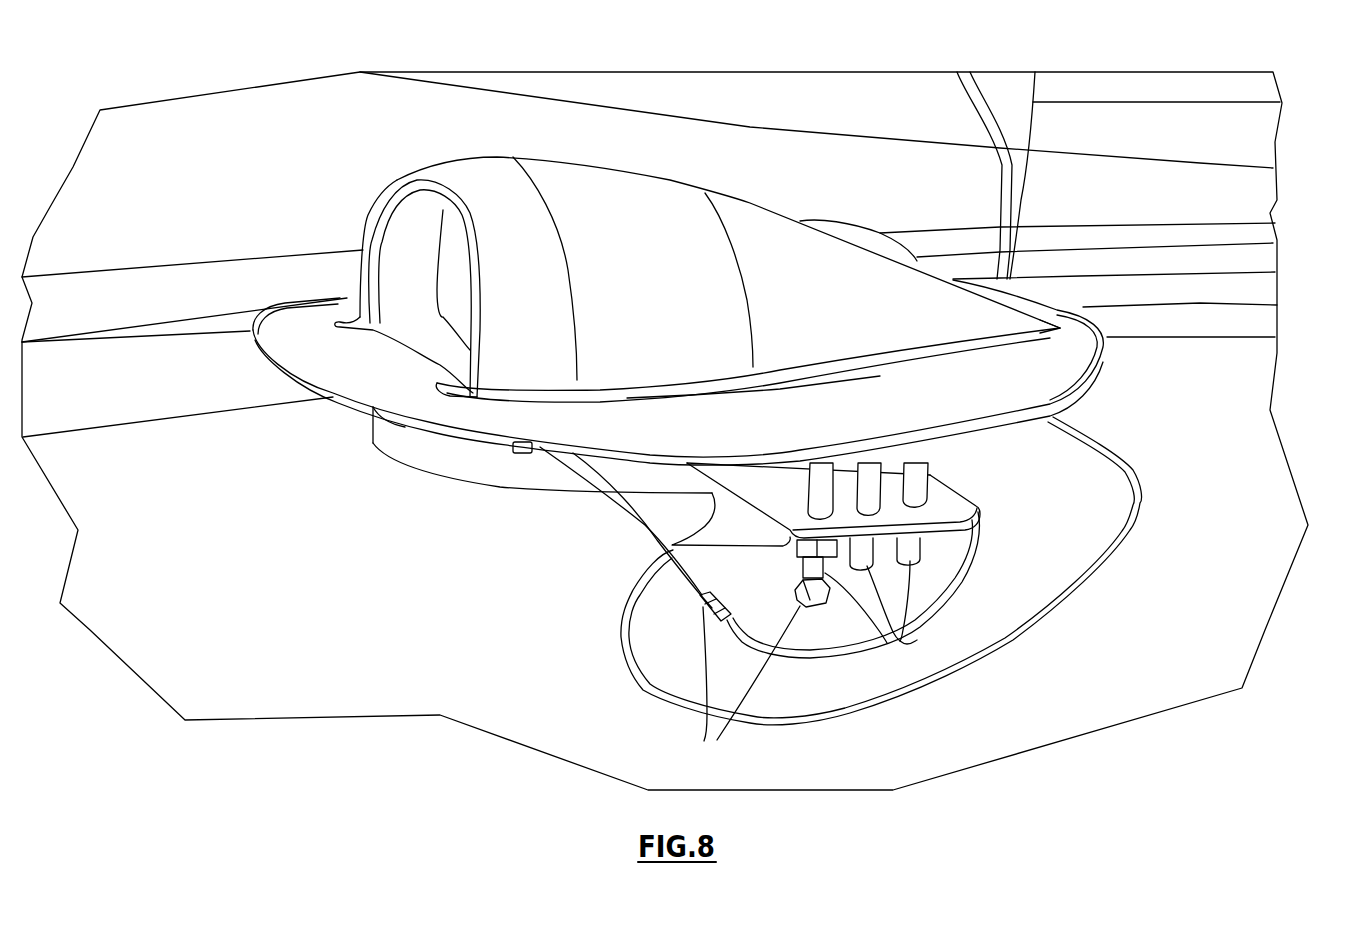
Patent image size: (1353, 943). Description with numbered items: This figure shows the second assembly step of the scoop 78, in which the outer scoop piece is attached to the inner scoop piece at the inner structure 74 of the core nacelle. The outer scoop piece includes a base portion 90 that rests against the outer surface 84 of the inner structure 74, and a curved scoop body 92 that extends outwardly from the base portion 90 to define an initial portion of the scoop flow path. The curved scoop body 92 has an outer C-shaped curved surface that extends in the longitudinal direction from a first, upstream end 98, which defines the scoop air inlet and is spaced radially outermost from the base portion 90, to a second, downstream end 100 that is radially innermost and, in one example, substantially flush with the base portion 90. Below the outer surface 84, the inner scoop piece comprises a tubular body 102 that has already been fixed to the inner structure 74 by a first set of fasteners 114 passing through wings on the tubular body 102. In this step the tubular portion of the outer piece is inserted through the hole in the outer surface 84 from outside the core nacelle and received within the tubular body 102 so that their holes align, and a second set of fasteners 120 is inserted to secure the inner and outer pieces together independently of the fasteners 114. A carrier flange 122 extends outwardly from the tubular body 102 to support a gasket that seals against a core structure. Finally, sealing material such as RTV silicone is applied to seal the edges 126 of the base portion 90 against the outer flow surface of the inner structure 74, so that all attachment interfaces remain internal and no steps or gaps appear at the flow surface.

The inner structure 74 is at (1250, 481).
The scoop 78 is at (296, 208).
The outer surface 84 is at (1214, 578).
The base portion 90 is at (300, 350).
The curved scoop body 92 is at (665, 227).
The first end 98 is at (383, 190).
The second end 100 is at (1060, 320).
The tubular body 102 is at (650, 523).
The fasteners 114 is at (513, 447).
The fasteners 120 is at (717, 740).
The carrier flange 122 is at (1110, 480).
The edges 126 is at (1090, 383).